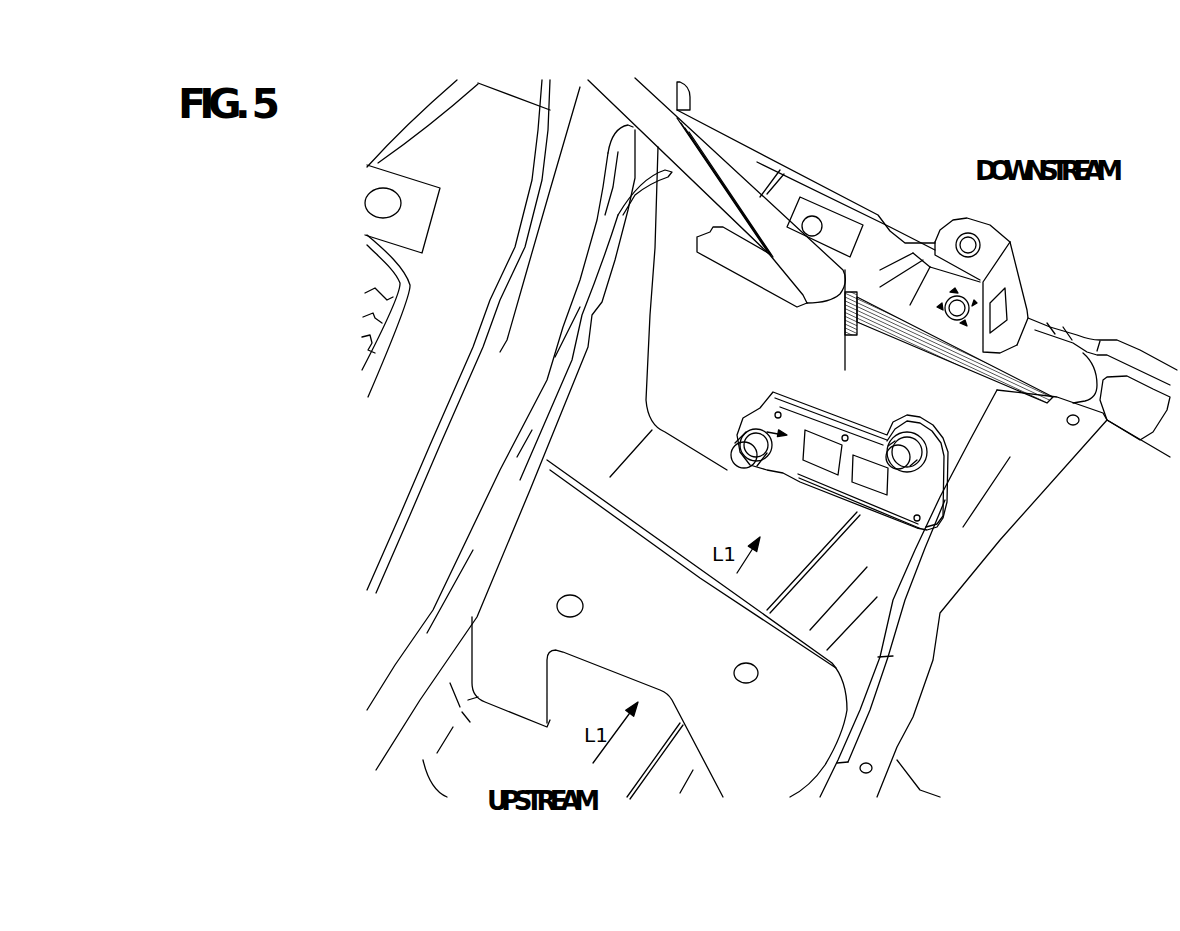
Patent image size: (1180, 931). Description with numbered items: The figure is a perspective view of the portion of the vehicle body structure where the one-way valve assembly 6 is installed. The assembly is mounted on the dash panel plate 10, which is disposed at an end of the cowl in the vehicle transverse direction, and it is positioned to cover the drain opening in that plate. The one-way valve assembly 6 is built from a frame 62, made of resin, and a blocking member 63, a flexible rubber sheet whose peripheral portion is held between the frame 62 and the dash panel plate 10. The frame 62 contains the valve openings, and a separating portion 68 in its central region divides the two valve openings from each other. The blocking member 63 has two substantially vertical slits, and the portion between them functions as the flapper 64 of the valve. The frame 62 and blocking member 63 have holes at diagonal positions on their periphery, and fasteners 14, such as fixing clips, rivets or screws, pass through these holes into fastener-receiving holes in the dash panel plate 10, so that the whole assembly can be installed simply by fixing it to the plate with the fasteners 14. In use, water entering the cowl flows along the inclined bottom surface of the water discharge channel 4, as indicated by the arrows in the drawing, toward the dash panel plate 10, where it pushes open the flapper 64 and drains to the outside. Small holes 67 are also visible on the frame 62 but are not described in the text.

The water discharge channel 4 is at (777, 582).
The one-way valve assembly 6 is at (753, 418).
The dash panel plate 10 is at (778, 333).
The fasteners 14 is at (925, 455).
The frame 62 is at (795, 405).
The blocking member 63 is at (825, 408).
The flapper 64 is at (830, 462).
The positioning hole 67 is at (773, 412).
The separating portion 68 is at (845, 473).